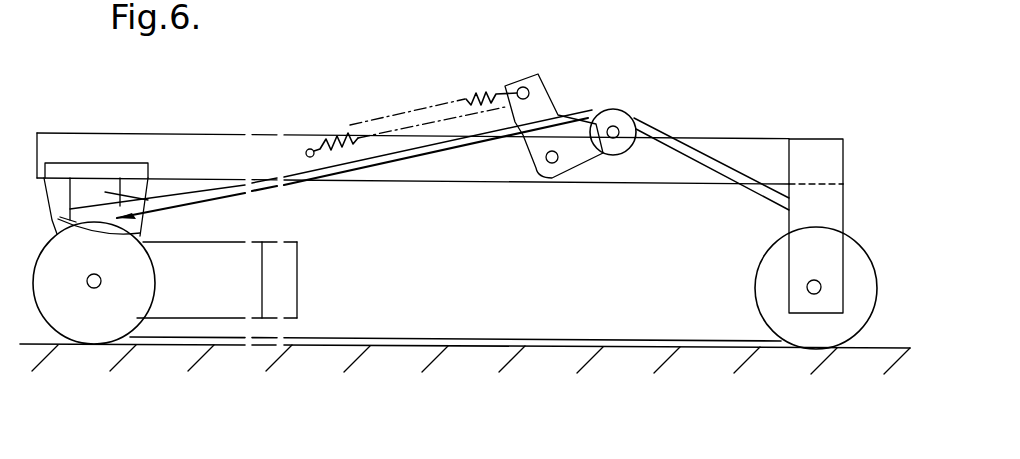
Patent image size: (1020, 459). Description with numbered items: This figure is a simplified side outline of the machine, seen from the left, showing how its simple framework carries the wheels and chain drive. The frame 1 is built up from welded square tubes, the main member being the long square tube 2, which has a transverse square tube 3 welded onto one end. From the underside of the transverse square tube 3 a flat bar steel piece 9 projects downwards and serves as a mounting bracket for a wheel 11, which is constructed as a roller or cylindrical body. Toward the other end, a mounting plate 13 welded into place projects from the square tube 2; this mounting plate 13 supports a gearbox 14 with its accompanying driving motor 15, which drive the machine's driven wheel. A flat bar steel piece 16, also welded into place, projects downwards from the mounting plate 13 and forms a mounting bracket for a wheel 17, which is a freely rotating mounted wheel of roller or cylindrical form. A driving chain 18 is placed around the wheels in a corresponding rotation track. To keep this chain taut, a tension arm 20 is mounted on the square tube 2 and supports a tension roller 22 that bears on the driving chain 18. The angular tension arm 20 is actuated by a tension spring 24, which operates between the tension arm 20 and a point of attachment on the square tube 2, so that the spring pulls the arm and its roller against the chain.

The frame 1 is at (206, 140).
The square tube 2 is at (692, 177).
The transverse square tube 3 is at (832, 165).
The flat bar steel piece 9 is at (827, 213).
The wheel 11 is at (763, 297).
The mounting plate 13 is at (117, 172).
The gearbox 14 is at (140, 232).
The driving motor 15 is at (252, 242).
The flat bar steel piece 16 is at (172, 210).
The wheel 17 is at (108, 336).
The driving chain 18 is at (547, 339).
The tension arm 20 is at (545, 105).
The tension roller 22 is at (620, 110).
The tension spring 24 is at (477, 98).